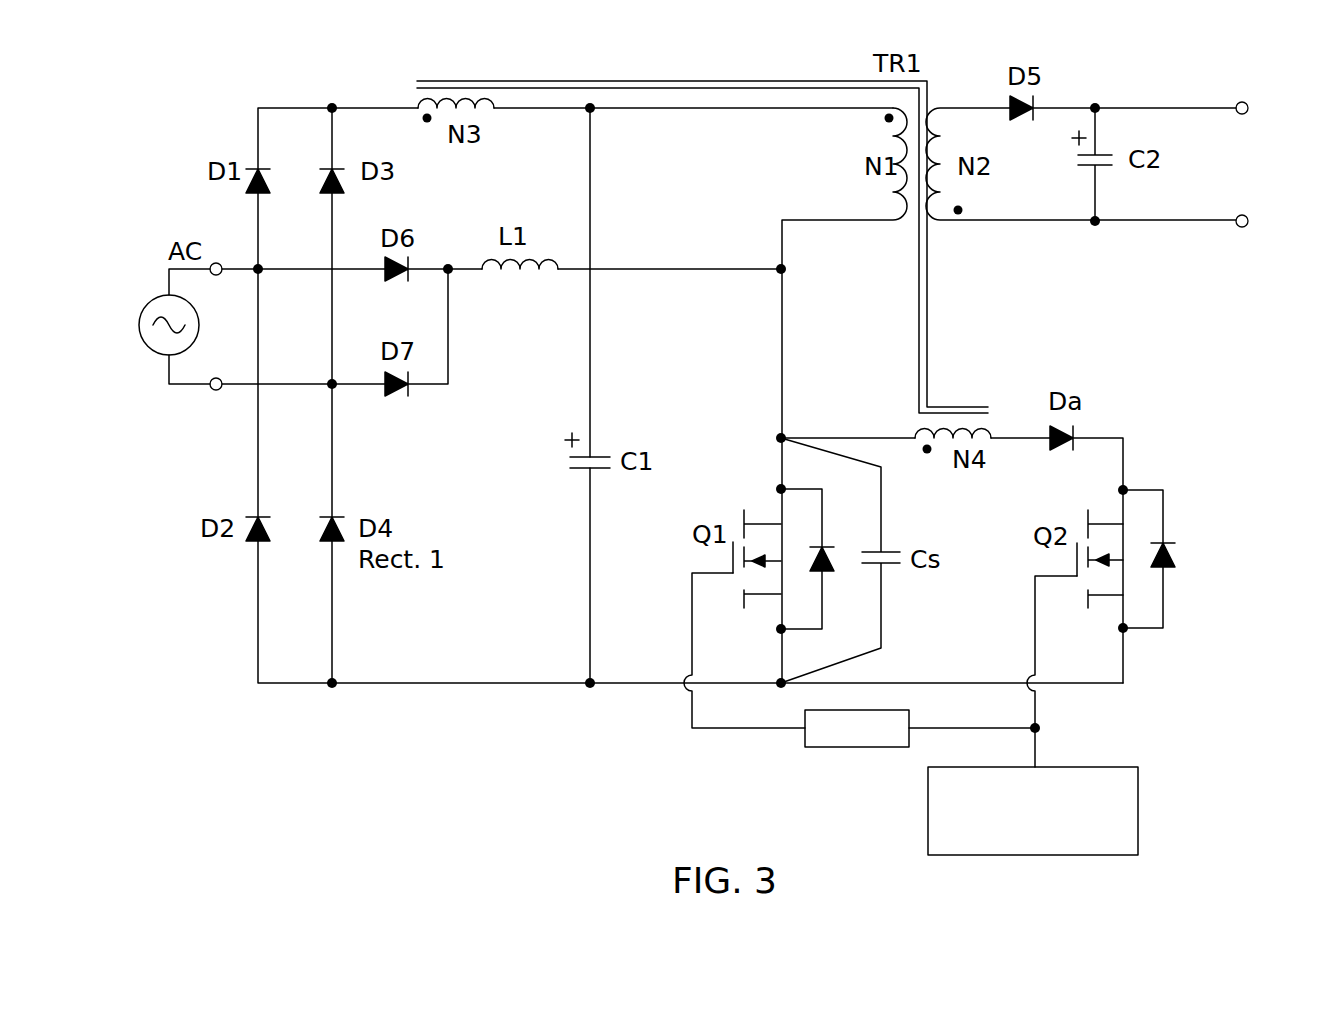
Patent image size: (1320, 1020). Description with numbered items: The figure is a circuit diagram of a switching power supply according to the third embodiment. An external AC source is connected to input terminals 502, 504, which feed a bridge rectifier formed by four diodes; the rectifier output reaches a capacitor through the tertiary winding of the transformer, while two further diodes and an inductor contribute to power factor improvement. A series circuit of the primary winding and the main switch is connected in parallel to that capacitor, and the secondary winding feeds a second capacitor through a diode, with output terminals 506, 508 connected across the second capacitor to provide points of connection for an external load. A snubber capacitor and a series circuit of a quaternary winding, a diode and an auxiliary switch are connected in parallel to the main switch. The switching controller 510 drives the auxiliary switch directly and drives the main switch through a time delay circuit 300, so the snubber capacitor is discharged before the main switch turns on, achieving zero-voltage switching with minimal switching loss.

The input terminal 502 is at (213, 263).
The input terminal 504 is at (212, 391).
The output terminal 506 is at (1247, 103).
The output terminal 508 is at (1247, 227).
The time delay circuit 300 is at (858, 748).
The switching controller 510 is at (1139, 804).